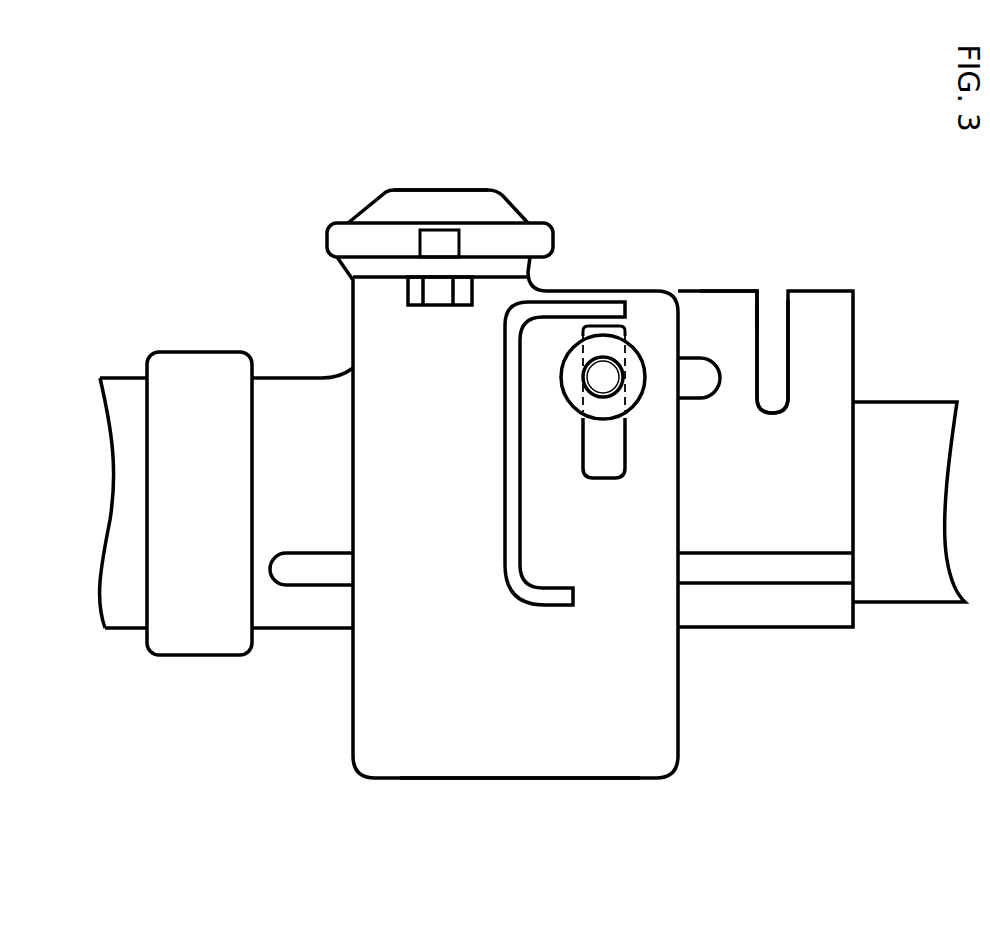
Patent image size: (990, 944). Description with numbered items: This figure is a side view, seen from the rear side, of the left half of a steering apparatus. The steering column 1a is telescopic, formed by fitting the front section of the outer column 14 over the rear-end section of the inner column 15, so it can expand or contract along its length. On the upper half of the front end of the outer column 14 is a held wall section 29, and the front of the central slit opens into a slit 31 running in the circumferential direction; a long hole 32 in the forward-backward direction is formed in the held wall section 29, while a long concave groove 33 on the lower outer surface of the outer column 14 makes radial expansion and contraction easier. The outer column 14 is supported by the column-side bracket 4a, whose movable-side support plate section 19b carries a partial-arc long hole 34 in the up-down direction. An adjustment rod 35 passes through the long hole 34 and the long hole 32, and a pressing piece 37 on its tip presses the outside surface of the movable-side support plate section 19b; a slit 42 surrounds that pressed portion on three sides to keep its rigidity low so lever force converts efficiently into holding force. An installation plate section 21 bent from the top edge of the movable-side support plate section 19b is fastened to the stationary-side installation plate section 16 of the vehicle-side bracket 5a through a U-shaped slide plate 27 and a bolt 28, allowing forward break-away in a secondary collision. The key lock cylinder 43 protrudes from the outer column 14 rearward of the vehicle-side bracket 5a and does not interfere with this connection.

The steering column 1a is at (118, 376).
The key lock cylinder 43 is at (198, 358).
The column-side bracket 4a is at (376, 337).
The slide plate 27 is at (337, 266).
The installation plate section 21 is at (367, 267).
The stationary-side installation plate section 16 is at (399, 200).
The vehicle-side bracket 5a is at (437, 190).
The bolt 28 is at (438, 288).
The slit 42 is at (515, 545).
The adjustment rod 35 is at (603, 377).
The long hole in the up-down direction 34 is at (625, 330).
The pressing piece 37 is at (612, 406).
The outer column 14 is at (835, 330).
The held wall section 29 is at (728, 303).
The slit in the circumferential direction 31 is at (790, 325).
The long hole in the forward-backward direction 32 is at (700, 360).
The long concave groove 33 is at (765, 580).
The inner column 15 is at (948, 430).
The movable-side support plate section 19b is at (565, 763).